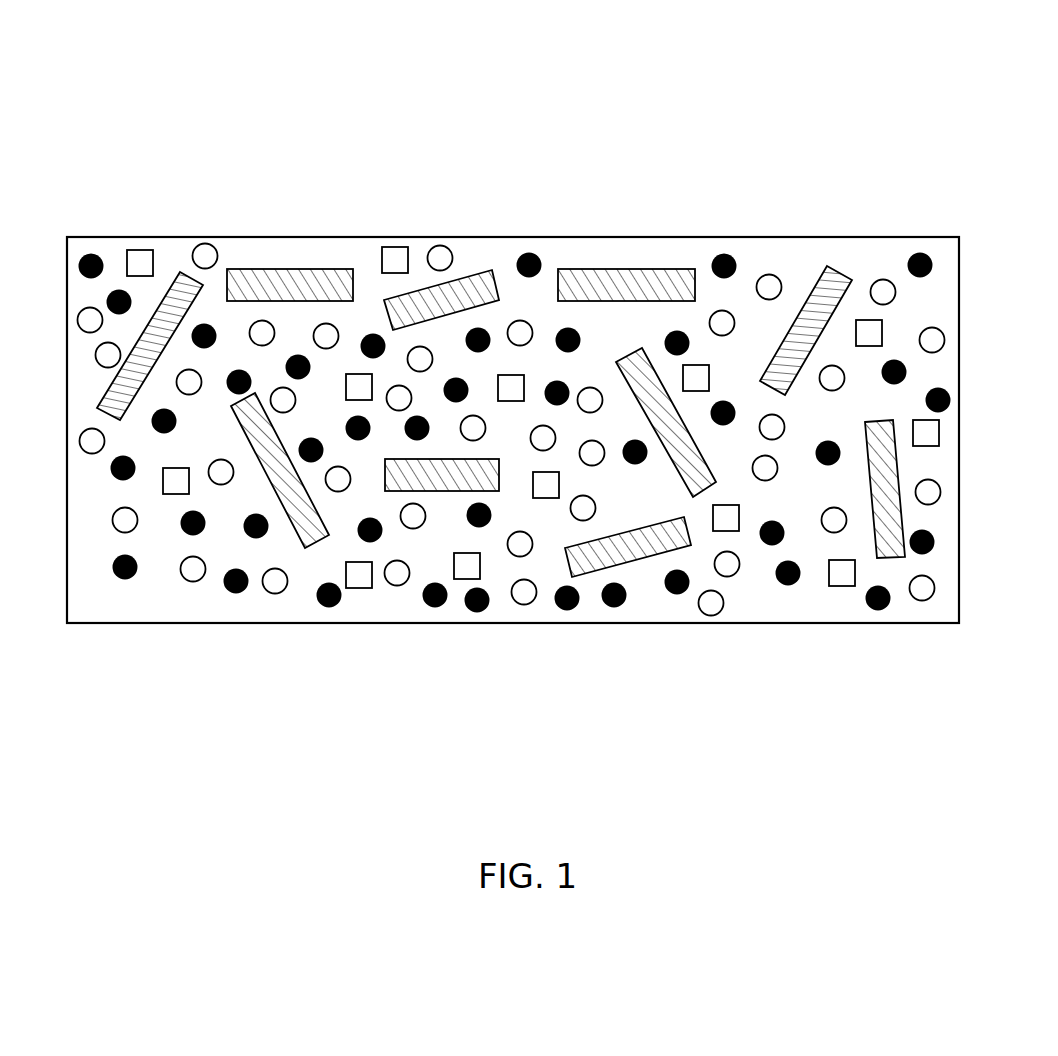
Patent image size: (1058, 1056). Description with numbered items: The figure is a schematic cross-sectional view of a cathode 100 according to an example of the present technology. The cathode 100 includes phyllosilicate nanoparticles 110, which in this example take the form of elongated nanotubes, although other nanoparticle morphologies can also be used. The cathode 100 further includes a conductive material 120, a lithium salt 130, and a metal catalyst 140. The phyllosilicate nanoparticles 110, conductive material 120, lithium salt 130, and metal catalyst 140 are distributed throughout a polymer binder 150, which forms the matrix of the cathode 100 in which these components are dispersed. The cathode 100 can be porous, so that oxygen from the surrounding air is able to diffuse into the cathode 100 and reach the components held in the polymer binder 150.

The cathode 100 is at (153, 79).
The phyllosilicate nanoparticles 110 is at (298, 268).
The conductive material 120 is at (724, 254).
The lithium salt 130 is at (732, 575).
The metal catalyst 140 is at (396, 247).
The polymer binder 150 is at (374, 624).